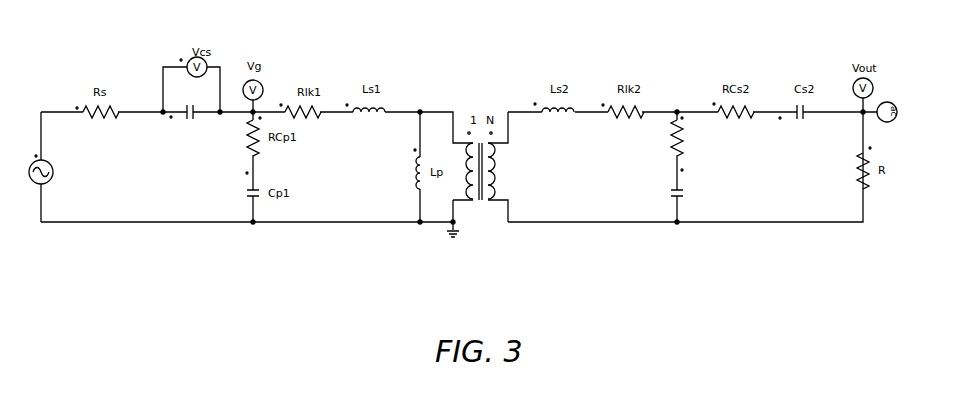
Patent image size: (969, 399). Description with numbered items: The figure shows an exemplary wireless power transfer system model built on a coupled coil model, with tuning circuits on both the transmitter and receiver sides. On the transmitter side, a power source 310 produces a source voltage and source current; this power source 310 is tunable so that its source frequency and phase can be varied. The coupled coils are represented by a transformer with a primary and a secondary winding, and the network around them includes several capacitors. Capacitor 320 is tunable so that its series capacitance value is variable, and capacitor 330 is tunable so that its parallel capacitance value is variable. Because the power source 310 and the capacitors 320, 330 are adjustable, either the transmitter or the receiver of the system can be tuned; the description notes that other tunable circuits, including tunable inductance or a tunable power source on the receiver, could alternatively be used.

The power source 310 is at (52, 200).
The capacitor 320 is at (195, 133).
The capacitor 330 is at (658, 198).